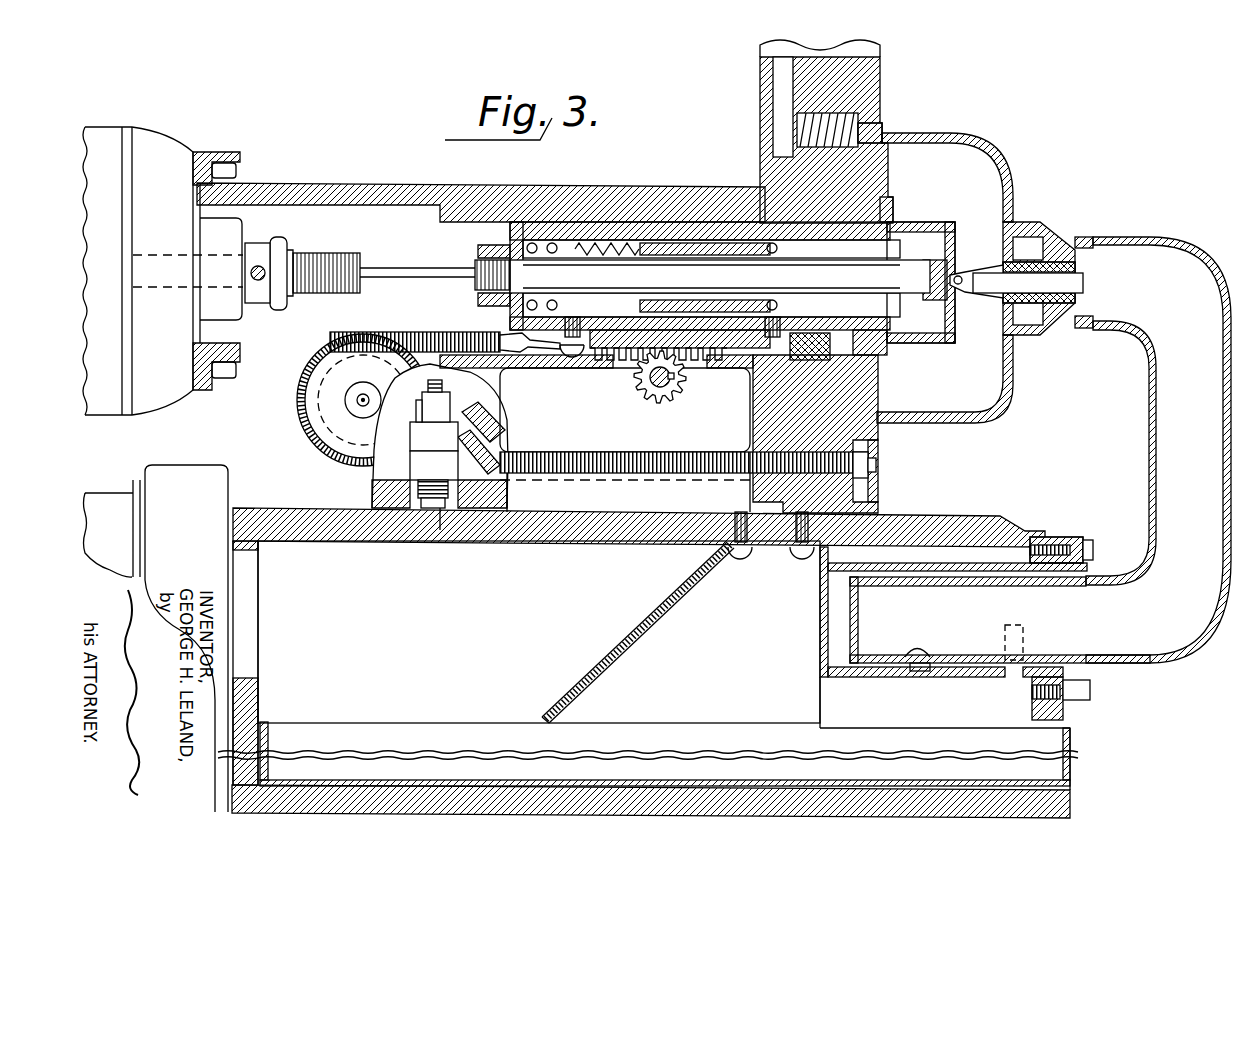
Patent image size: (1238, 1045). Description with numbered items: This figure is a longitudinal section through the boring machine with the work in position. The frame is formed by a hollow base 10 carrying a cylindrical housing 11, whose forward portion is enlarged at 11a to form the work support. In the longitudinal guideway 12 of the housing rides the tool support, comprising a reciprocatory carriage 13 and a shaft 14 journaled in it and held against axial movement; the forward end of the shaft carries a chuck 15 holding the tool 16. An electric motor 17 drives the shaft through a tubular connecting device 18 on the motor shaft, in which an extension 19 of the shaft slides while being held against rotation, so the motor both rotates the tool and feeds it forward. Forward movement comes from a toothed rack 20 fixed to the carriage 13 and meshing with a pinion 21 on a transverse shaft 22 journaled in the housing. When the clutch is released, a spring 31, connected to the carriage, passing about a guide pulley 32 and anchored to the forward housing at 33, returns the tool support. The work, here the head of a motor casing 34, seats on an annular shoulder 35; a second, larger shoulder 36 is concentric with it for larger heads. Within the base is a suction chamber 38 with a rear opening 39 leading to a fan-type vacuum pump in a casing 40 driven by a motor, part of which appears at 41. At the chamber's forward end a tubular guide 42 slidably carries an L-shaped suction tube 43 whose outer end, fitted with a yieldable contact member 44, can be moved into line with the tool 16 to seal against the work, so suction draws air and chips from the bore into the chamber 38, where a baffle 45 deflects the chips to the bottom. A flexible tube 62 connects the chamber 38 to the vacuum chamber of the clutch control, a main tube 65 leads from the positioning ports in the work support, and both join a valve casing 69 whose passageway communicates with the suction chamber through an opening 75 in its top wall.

The base 10 is at (960, 516).
The cylindrical housing 11 is at (538, 208).
The enlarged forward portion of housing 11a is at (877, 90).
The longitudinal guideway 12 is at (558, 352).
The reciprocatory carriage 13 is at (838, 326).
The shaft 14 is at (720, 276).
The chuck 15 is at (980, 264).
The tool 16 is at (1085, 282).
The electric motor 17 is at (108, 146).
The tubular connecting device 18 is at (346, 262).
The extension of shaft 19 is at (398, 268).
The toothed rack 20 is at (725, 372).
The pinion 21 is at (663, 402).
The transverse shaft 22 is at (645, 385).
The spring 31 is at (558, 452).
The guide pulley 32 is at (363, 400).
The spring connection to housing 33 is at (870, 466).
The head of motor casing 34 is at (1017, 198).
The annular shoulder 35 is at (890, 142).
The second shoulder 36 is at (880, 430).
The suction chamber 38 is at (648, 679).
The opening 39 is at (262, 619).
The casing 40 is at (190, 482).
The motor 41 is at (98, 505).
The tubular guide 42 is at (984, 670).
The suction tube 43 is at (1148, 403).
The yieldable contact member 44 is at (1078, 238).
The baffle 45 is at (655, 609).
The flexible tube 62 is at (434, 415).
The main tube 65 is at (440, 436).
The valve casing 69 is at (434, 462).
The opening in top wall 75 is at (440, 532).